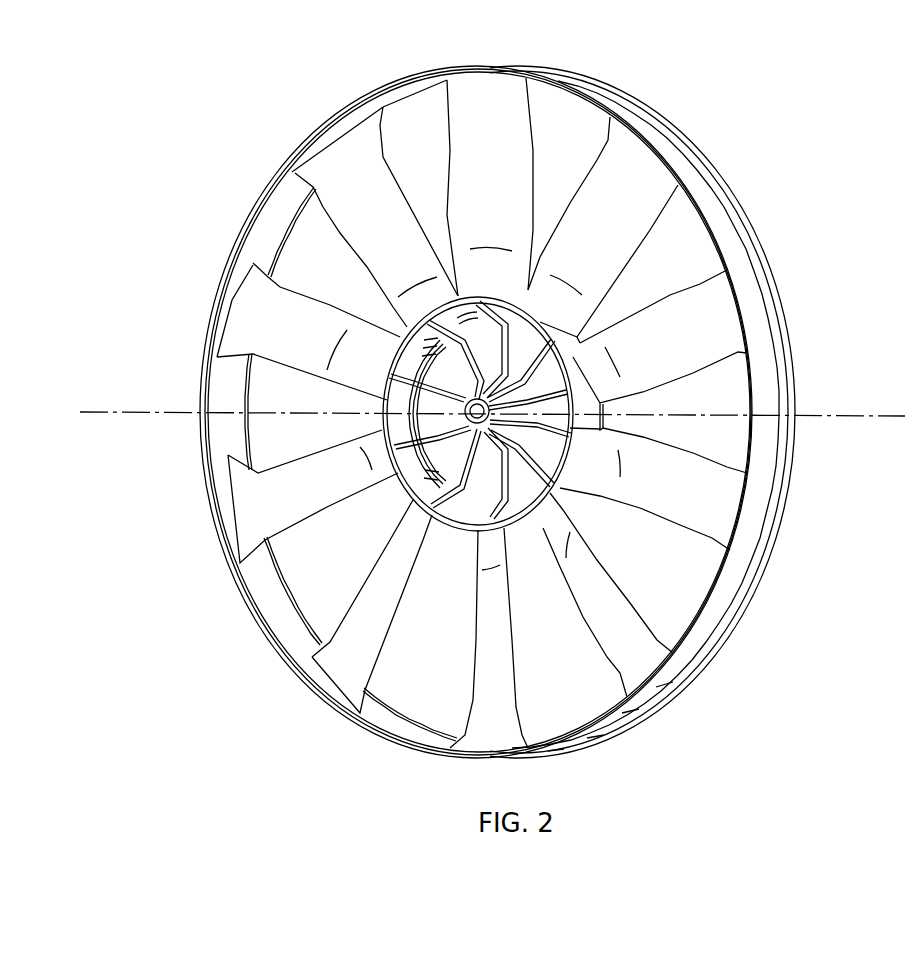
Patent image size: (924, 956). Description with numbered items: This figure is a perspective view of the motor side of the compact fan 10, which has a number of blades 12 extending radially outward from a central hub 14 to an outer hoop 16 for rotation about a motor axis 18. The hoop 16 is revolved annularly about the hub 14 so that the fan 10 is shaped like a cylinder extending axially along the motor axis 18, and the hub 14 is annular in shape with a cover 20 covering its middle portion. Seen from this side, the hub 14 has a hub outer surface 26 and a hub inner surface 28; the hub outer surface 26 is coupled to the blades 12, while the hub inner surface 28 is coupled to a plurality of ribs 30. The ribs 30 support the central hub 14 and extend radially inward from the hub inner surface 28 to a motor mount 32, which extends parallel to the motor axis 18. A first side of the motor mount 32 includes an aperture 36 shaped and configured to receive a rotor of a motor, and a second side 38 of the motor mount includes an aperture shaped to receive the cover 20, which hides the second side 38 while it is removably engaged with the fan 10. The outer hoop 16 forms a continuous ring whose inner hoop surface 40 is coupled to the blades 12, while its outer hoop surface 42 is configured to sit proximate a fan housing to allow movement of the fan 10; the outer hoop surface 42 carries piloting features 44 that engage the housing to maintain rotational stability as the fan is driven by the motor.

The fan 10 is at (784, 127).
The blades 12 is at (720, 497).
The central hub 14 is at (518, 451).
The outer hoop 16 is at (509, 412).
The motor axis 18 is at (126, 413).
The cover 20 is at (527, 360).
The hub outer surface 26 is at (562, 332).
The hub inner surface 28 is at (420, 478).
The ribs 30 is at (470, 514).
The motor mount 32 is at (565, 500).
The aperture 36 is at (387, 372).
The second side 38 is at (607, 417).
The inner hoop surface 40 is at (263, 583).
The outer hoop surface 42 is at (680, 663).
The piloting features 44 is at (728, 197).